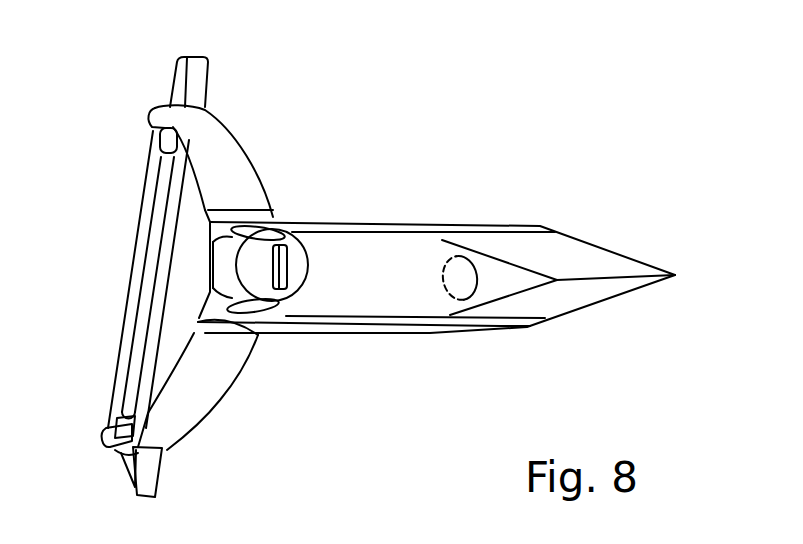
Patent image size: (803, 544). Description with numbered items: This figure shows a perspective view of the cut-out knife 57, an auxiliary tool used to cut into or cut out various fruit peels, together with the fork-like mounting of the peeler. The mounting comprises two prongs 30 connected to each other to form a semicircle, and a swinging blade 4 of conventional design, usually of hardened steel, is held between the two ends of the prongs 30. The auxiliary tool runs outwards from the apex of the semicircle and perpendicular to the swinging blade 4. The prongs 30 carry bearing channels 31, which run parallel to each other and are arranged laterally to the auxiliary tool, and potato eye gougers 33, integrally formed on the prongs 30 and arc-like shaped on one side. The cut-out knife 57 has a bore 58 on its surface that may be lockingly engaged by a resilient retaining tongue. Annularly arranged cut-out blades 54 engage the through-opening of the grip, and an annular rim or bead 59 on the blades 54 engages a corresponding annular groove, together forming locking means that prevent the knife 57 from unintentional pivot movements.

The swinging blade 4 is at (137, 262).
The prongs 30 is at (210, 400).
The bearing channels 31 is at (240, 320).
The potato eye gougers 33 is at (178, 83).
The cut-out blades 54 is at (262, 308).
The cut-out knife 57 is at (583, 239).
The bore 58 is at (455, 278).
The annular rim or bead 59 is at (277, 267).